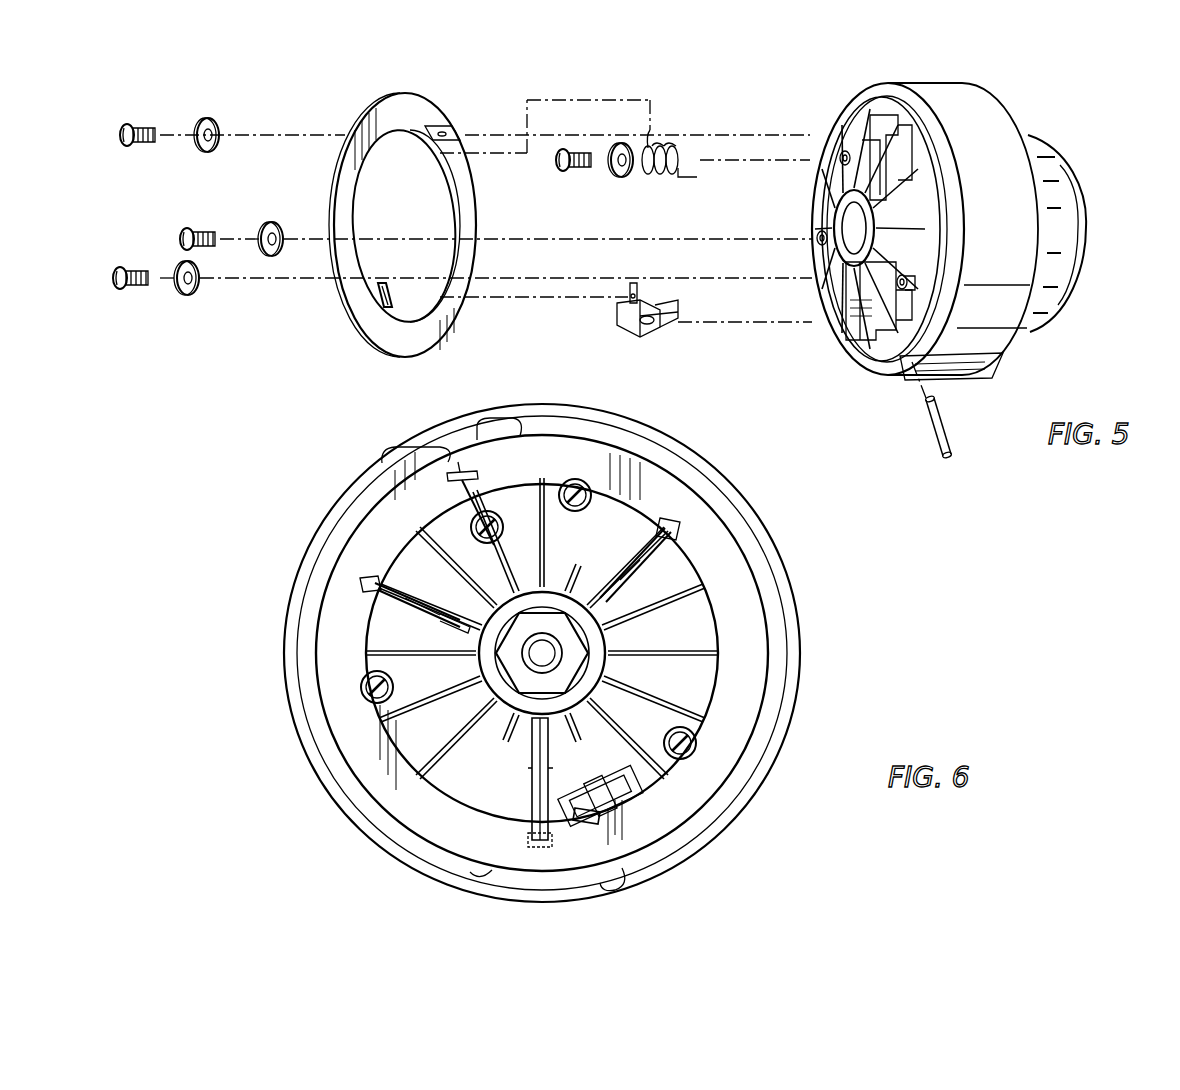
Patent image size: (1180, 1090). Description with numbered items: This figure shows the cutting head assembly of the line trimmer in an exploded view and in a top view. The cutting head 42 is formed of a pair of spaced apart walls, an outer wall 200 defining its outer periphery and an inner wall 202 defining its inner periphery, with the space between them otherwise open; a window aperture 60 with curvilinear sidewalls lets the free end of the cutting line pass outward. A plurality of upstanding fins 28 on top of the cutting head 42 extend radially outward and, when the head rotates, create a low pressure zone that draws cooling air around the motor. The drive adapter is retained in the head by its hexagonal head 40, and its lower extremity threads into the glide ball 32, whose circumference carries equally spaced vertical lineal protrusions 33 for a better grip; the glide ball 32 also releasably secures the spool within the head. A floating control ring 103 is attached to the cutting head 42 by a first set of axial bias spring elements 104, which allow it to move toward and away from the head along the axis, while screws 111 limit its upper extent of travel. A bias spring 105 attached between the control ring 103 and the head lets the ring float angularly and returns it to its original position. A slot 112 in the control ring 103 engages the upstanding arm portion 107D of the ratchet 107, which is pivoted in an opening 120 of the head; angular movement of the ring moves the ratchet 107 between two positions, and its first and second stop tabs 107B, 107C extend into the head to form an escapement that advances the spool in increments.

In FIG. 5, the screws 111 is at (122, 137).
In FIG. 6, the screws 111 is at (590, 478).
In FIG. 5, the control ring 103 is at (402, 98).
In FIG. 6, the control ring 103 is at (750, 636).
In FIG. 5, the slot 112 is at (378, 306).
In FIG. 6, the slot 112 is at (612, 818).
In FIG. 5, the bias spring 105 is at (670, 145).
In FIG. 6, the bias spring 105 is at (485, 498).
In FIG. 5, the ratchet 107 is at (635, 336).
In FIG. 6, the ratchet 107 is at (655, 787).
In FIG. 5, the first stop tab 107B is at (618, 322).
In FIG. 5, the second stop tab 107C is at (678, 320).
In FIG. 5, the upstanding arm portion 107D is at (628, 291).
In FIG. 5, the outer wall 200 is at (1002, 125).
In FIG. 6, the outer wall 200 is at (789, 572).
In FIG. 5, the inner wall 202 is at (890, 114).
In FIG. 5, the cutting head 42 is at (936, 66).
In FIG. 5, the glide ball 32 is at (1082, 167).
In FIG. 5, the vertical lineal protrusions 33 is at (1068, 216).
In FIG. 5, the window aperture 60 is at (1000, 370).
In FIG. 5, the upstanding fins 28 is at (814, 205).
In FIG. 6, the upstanding fins 28 is at (470, 800).
In FIG. 5, the opening 120 is at (915, 332).
In FIG. 6, the opening 120 is at (582, 790).
In FIG. 6, the hexagonal head 40 is at (515, 680).
In FIG. 6, the axial bias spring elements 104 is at (440, 613).